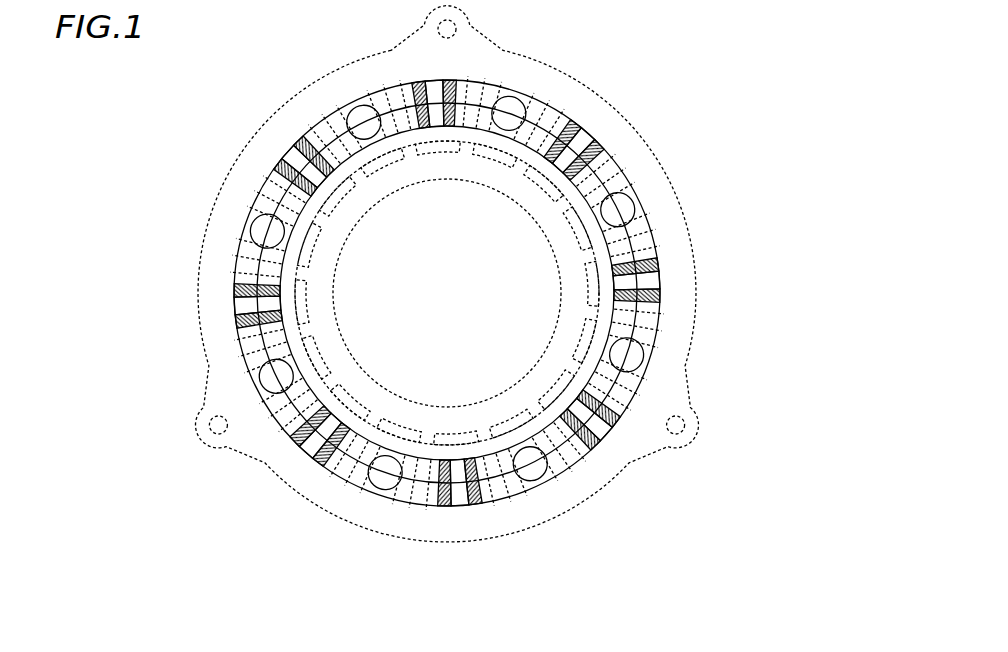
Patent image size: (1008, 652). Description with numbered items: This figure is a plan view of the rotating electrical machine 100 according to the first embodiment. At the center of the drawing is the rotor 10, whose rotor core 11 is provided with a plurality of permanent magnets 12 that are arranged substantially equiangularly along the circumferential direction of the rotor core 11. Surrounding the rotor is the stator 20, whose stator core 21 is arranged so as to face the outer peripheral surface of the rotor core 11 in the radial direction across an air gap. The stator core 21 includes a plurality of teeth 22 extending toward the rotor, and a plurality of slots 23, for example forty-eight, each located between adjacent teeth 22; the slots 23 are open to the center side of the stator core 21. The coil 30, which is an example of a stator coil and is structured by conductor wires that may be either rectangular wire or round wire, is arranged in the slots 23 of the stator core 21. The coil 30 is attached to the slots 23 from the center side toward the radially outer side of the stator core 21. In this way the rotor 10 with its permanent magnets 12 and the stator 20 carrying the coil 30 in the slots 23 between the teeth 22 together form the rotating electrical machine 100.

The rotating electrical machine 100 is at (702, 92).
The rotor 10 is at (545, 256).
The rotor core 11 is at (513, 210).
The permanent magnets 12 is at (377, 168).
The stator 20 is at (671, 166).
The stator core 21 is at (658, 222).
The teeth 22 is at (658, 224).
The slots 23 is at (653, 234).
The coil 30 is at (596, 122).